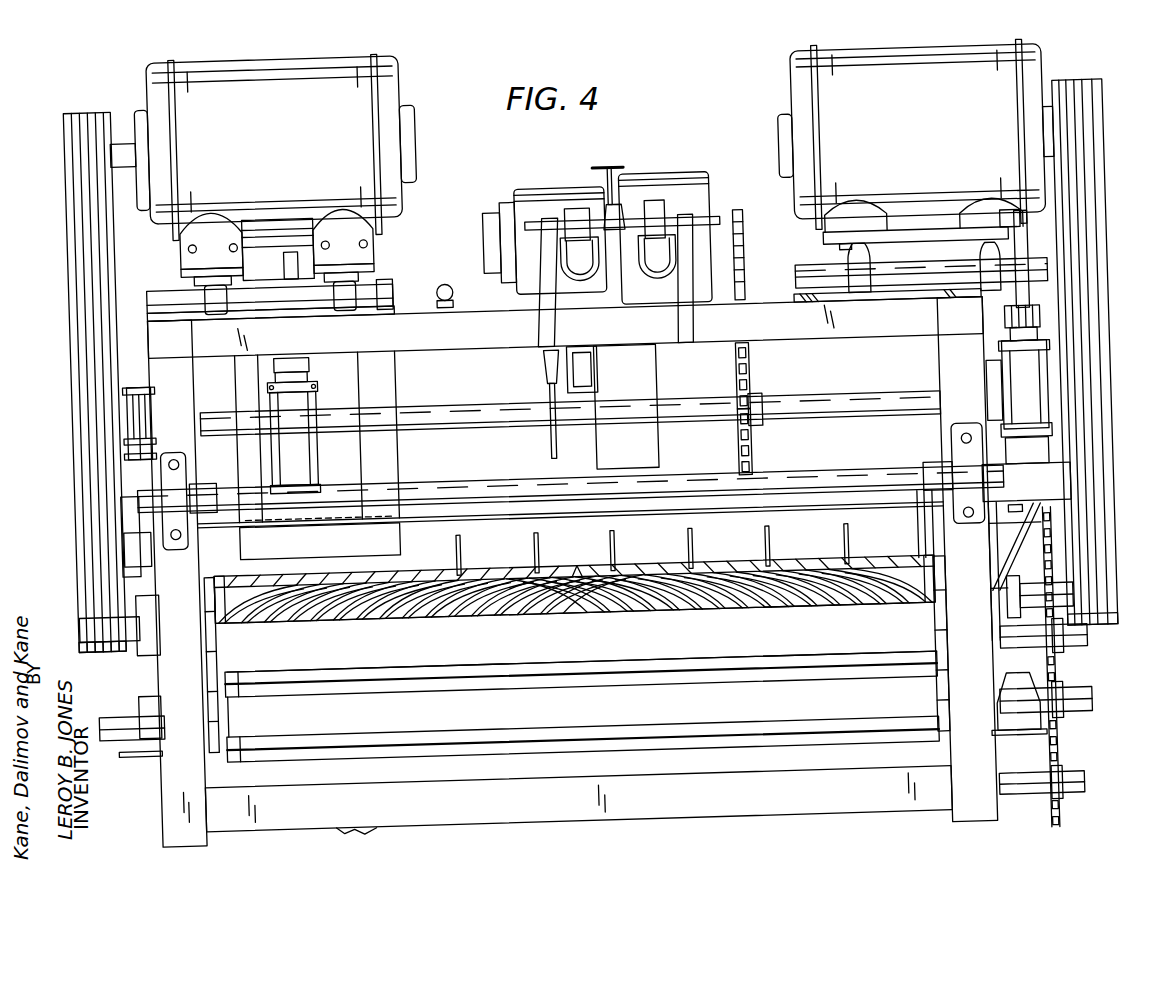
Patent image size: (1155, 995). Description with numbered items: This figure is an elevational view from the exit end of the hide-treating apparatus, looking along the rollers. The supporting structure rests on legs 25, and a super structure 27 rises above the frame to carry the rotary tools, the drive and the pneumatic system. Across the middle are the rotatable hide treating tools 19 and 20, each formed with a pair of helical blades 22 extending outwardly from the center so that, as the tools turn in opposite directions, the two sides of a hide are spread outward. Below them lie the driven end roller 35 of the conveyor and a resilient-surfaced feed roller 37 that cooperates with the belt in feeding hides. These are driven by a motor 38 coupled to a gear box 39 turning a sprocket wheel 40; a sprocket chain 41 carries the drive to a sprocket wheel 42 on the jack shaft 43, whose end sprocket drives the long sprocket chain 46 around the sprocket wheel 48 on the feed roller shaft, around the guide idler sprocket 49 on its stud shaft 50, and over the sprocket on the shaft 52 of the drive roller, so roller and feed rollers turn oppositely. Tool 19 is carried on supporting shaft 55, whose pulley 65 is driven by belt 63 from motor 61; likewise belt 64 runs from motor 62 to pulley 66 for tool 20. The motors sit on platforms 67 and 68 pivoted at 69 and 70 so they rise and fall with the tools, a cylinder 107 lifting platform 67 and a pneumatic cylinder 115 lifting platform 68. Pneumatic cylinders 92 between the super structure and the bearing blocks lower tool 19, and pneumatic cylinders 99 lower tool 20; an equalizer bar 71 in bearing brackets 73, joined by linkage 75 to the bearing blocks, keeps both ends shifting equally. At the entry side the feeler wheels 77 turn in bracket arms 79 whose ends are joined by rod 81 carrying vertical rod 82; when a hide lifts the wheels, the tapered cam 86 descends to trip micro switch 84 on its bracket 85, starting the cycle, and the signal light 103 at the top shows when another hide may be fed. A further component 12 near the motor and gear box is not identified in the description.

The valve 12 is at (613, 198).
The hide treating tool 19 is at (632, 606).
The hide treating tool 20 is at (716, 569).
The helical blades 22 is at (742, 606).
The legs 25 is at (150, 831).
The super structure 27 is at (159, 365).
The drive roller 35 is at (309, 753).
The feed roller 37 is at (332, 675).
The motor 38 is at (549, 193).
The gear box 39 is at (675, 180).
The sprocket wheel 40 is at (736, 226).
The sprocket chain 41 is at (757, 377).
The sprocket wheel 42 is at (754, 455).
The jack shaft 43 is at (861, 412).
The sprocket chain 46 is at (1052, 760).
The sprocket wheel 48 is at (1041, 658).
The guide idler sprocket 49 is at (1049, 809).
The stud shaft 50 is at (1027, 795).
The shaft 52 is at (1076, 709).
The supporting shaft 55 is at (1022, 612).
The motor 61 is at (992, 101).
The motor 62 is at (352, 102).
The drive belt 63 is at (1096, 317).
The drive belt 64 is at (99, 347).
The pulley 65 is at (1116, 644).
The pulley 66 is at (77, 596).
The platform 67 is at (847, 254).
The platform 68 is at (273, 240).
The pivot 69 is at (904, 281).
The pivot 70 is at (186, 280).
The equalizer bar 71 is at (859, 484).
The bearing bracket 73 is at (163, 471).
The linkage 75 is at (205, 498).
The feeler wheels 77 is at (614, 541).
The bracket arms 79 is at (922, 537).
The rod 81 is at (800, 511).
The vertical rod 82 is at (555, 440).
The micro switch 84 is at (592, 378).
The bracket 85 is at (650, 440).
The tapered cam 86 is at (556, 366).
The pneumatic cylinders 92 is at (1003, 407).
The pneumatic cylinders 99 is at (145, 389).
The light 103 is at (453, 277).
The cylinder 107 is at (1032, 385).
The pneumatic cylinder 115 is at (303, 389).